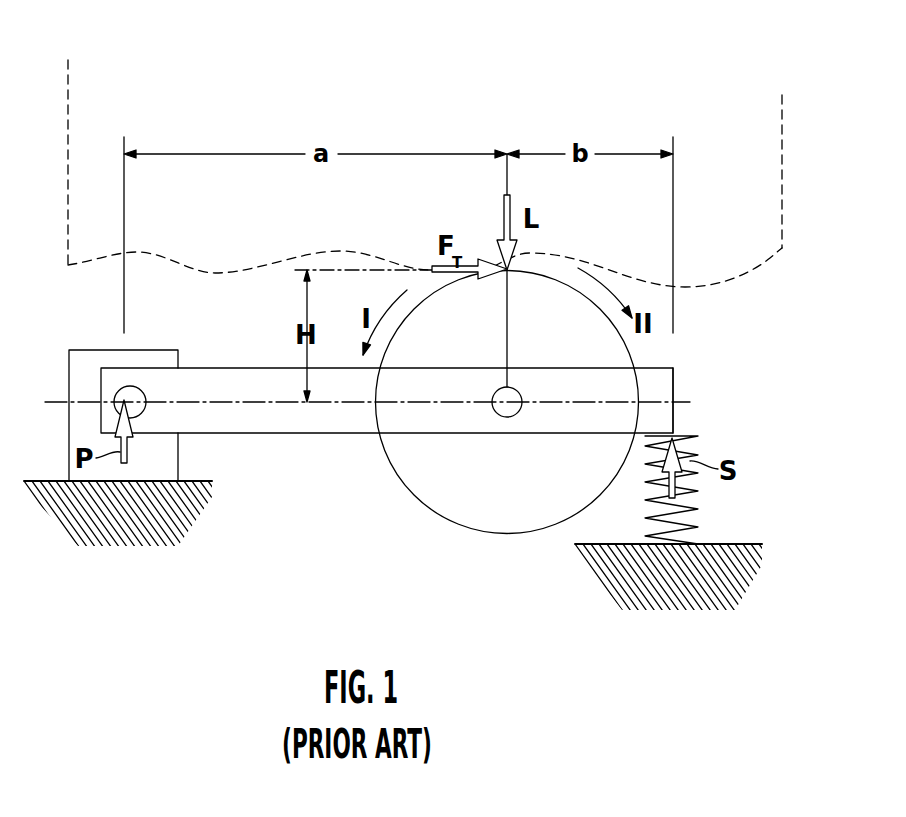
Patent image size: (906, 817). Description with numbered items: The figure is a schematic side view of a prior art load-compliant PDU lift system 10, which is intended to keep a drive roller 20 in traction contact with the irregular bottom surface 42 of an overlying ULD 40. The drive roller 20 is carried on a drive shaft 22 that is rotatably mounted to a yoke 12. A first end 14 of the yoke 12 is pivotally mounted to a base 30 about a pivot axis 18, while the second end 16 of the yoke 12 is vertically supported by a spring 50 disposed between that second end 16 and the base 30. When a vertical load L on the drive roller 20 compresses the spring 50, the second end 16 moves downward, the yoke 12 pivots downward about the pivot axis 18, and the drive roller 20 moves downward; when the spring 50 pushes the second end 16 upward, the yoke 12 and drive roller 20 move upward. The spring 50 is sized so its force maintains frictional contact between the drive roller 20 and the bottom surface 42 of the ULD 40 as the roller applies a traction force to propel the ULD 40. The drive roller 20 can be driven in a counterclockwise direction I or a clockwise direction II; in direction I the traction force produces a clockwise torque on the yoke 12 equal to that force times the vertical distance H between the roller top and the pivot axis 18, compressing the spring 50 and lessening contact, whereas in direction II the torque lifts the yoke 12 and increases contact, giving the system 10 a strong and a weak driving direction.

The load-compliant PDU lift system 10 is at (675, 98).
The yoke 12 is at (345, 435).
The first end of the yoke 14 is at (100, 377).
The second end of the yoke 16 is at (675, 413).
The pivot axis 18 is at (120, 405).
The drive roller 20 is at (427, 510).
The drive shaft 22 is at (507, 417).
The base 30 is at (192, 513).
The ULD 40 is at (782, 137).
The bottom surface of the ULD 42 is at (197, 276).
The spring 50 is at (695, 504).